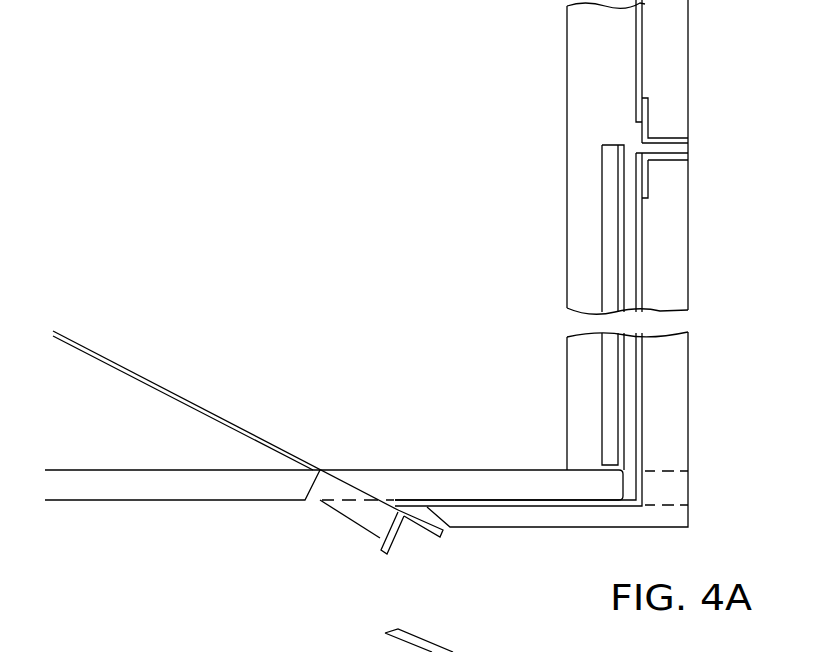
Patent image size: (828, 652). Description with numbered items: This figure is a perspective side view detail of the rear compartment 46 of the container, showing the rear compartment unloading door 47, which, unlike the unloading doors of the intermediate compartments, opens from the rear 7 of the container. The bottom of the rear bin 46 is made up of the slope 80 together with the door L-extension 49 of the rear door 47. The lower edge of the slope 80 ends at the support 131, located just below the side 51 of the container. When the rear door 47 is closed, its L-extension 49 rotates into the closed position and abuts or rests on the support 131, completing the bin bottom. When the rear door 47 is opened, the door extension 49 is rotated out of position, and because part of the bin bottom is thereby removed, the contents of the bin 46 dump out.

The rear 7 is at (670, 70).
The rear compartment 46 is at (360, 176).
The rear compartment unloading door 47 is at (673, 393).
The door L-extension 49 is at (595, 514).
The side 51 is at (198, 502).
The slope 80 is at (235, 420).
The support 131 is at (377, 538).